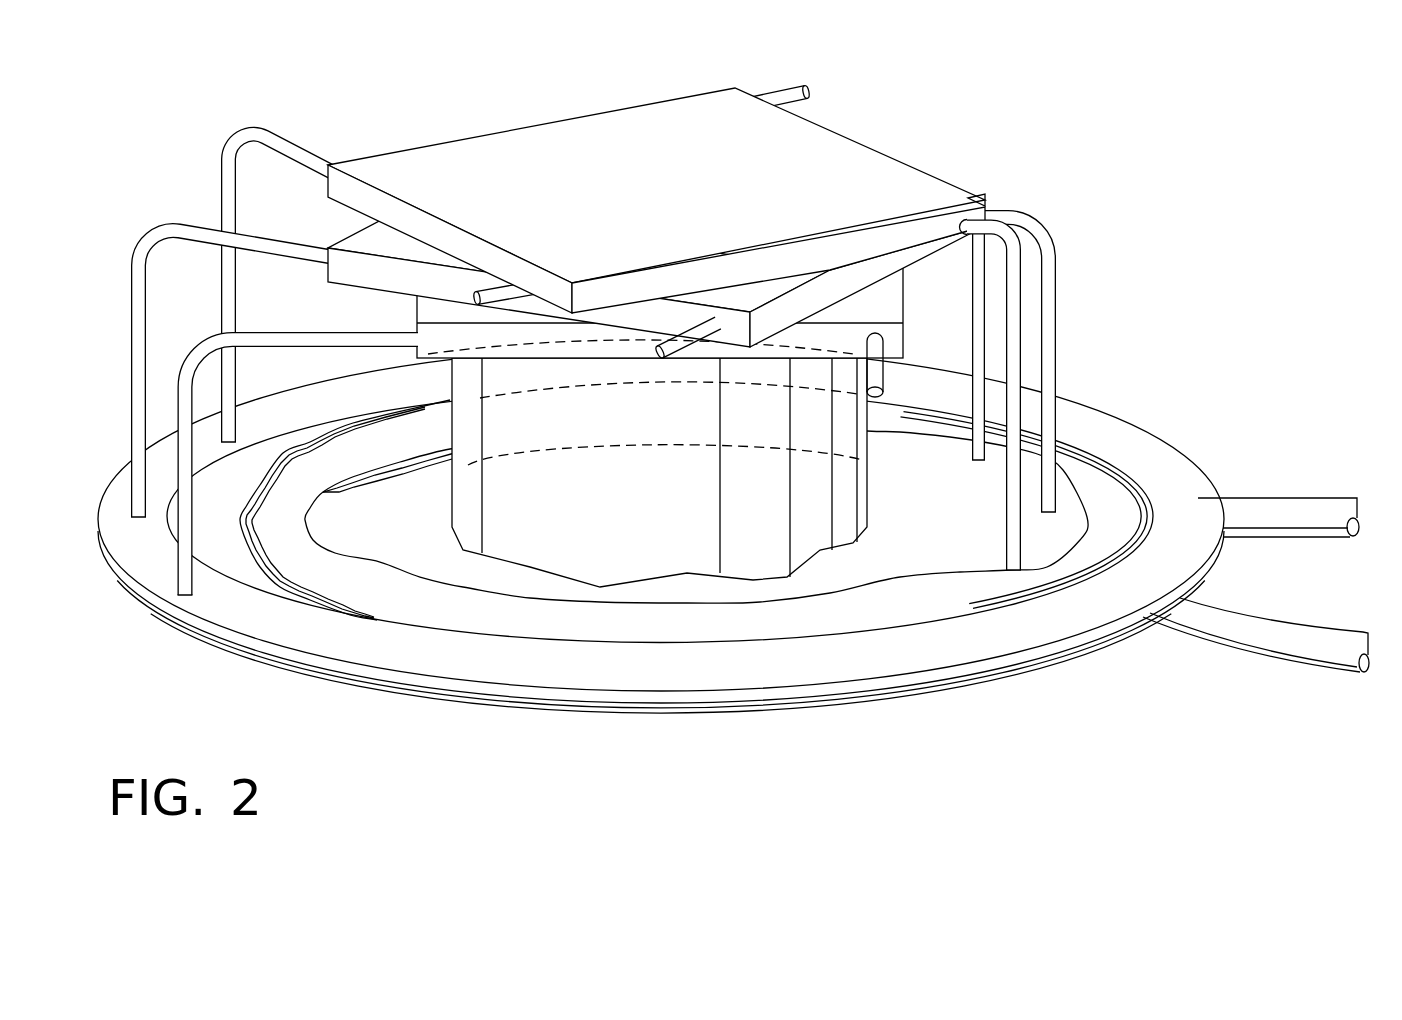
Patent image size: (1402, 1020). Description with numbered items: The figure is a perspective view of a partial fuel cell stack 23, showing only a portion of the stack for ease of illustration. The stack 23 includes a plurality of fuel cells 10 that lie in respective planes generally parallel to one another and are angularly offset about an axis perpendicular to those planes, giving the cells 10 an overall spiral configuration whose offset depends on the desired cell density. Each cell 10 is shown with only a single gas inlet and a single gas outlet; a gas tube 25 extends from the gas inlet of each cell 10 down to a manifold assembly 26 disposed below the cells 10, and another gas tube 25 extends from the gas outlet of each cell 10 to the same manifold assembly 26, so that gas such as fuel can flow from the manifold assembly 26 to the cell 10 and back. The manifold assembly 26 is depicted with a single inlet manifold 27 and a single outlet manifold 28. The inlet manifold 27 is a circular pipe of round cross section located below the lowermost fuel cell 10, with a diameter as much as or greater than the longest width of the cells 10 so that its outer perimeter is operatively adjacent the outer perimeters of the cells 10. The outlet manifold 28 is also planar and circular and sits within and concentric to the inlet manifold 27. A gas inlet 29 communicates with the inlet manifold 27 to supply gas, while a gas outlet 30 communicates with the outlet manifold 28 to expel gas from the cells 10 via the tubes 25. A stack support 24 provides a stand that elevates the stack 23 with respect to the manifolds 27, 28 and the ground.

The fuel cell 10 is at (646, 209).
The fuel cell stack 23 is at (1046, 716).
The stack support 24 is at (884, 500).
The gas tube 25 is at (160, 226).
The manifold assembly 26 is at (190, 700).
The inlet manifold 27 is at (537, 708).
The outlet manifold 28 is at (353, 512).
The gas inlet 29 is at (1247, 497).
The gas outlet 30 is at (1320, 627).